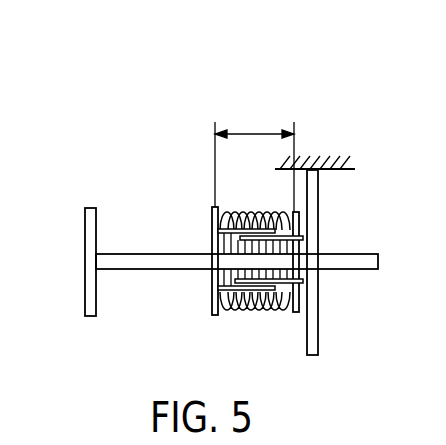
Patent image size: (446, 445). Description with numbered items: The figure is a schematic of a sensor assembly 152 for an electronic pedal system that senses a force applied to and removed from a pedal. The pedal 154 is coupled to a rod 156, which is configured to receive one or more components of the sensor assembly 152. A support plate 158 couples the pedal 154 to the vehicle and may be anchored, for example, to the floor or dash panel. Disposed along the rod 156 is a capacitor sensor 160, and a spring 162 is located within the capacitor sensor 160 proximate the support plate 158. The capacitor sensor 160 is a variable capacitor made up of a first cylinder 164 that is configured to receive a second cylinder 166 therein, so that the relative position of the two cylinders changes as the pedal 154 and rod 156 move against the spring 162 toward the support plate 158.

The sensor assembly 152 is at (358, 78).
The pedal 154 is at (85, 231).
The rod 156 is at (138, 253).
The support plate 158 is at (318, 226).
The capacitor sensor 160 is at (252, 133).
The spring 162 is at (240, 311).
The first cylinder 164 is at (258, 308).
The second cylinder 166 is at (282, 233).